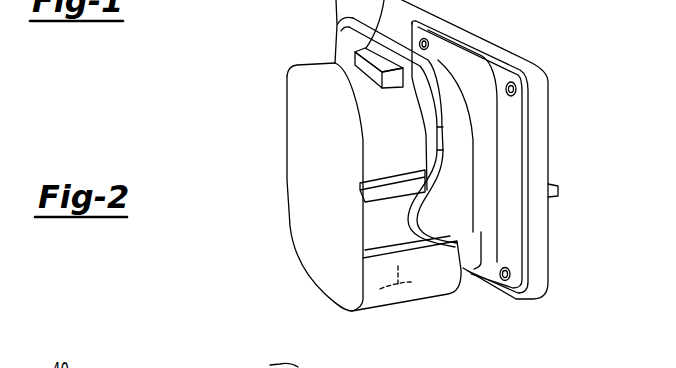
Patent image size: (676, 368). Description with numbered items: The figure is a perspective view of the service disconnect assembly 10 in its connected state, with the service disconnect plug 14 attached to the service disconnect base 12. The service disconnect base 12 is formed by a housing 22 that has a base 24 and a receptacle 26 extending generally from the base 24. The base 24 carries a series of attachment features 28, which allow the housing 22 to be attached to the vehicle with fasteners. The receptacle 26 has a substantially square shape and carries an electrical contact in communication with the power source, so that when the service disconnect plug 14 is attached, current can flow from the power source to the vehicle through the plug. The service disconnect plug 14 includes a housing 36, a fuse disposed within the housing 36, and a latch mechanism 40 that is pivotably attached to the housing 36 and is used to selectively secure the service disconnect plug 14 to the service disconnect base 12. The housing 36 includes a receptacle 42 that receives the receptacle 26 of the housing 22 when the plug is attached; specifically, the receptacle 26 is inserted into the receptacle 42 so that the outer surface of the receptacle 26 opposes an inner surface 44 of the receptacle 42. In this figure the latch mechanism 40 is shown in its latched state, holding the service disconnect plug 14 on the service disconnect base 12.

The service disconnect assembly 10 is at (252, 61).
The service disconnect base 12 is at (558, 89).
The service disconnect plug 14 is at (280, 161).
The housing 22 is at (555, 255).
The base 24 is at (544, 128).
The receptacle 26 is at (482, 244).
The attachment features 28 is at (502, 82).
The housing 36 is at (275, 100).
The latch mechanism 40 is at (335, 23).
The receptacle 42 is at (438, 291).
The inner surface 44 is at (398, 277).